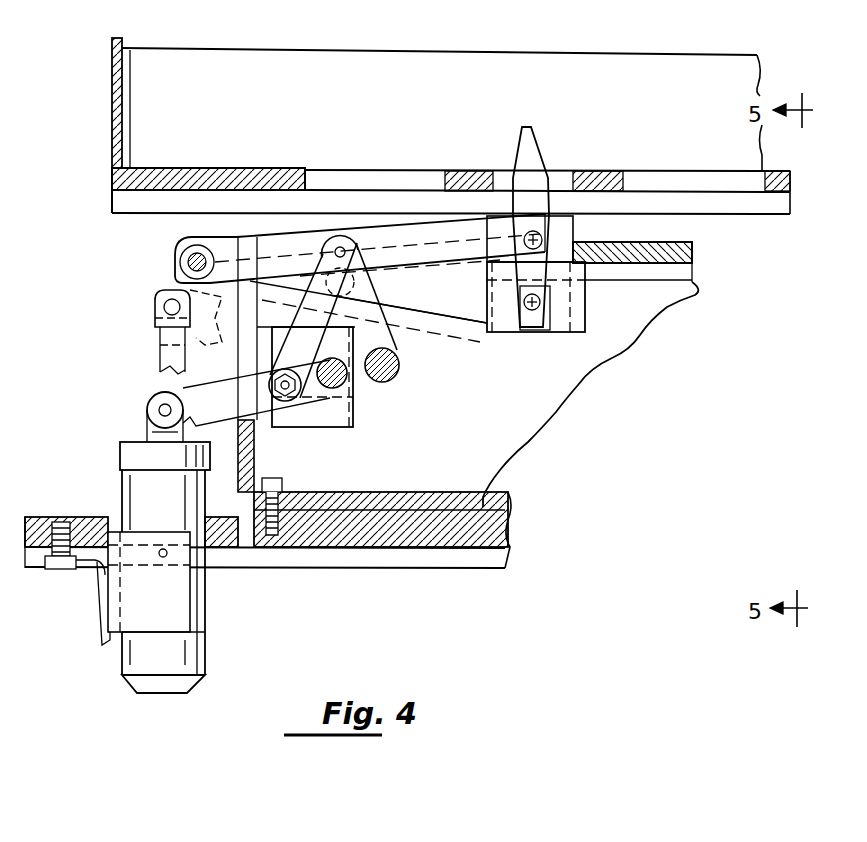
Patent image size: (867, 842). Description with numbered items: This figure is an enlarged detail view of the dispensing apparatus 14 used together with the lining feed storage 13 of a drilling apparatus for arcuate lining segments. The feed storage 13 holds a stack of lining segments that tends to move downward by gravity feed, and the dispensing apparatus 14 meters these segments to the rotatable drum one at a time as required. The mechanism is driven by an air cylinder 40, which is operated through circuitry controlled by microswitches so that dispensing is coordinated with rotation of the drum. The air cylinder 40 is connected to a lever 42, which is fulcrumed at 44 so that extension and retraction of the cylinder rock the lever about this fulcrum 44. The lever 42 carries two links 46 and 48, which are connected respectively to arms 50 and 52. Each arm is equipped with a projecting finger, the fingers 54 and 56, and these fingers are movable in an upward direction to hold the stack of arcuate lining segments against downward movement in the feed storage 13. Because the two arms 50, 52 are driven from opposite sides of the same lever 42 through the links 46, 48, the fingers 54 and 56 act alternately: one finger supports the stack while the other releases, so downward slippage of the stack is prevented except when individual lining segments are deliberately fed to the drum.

The lining feed storage 13 is at (241, 168).
The dispensing apparatus 14 is at (416, 139).
The air cylinder 40 is at (170, 650).
The lever 42 is at (160, 291).
The fulcrum 44 is at (342, 390).
The link 46 is at (390, 332).
The link 48 is at (302, 310).
The arm 50 is at (441, 228).
The arm 52 is at (477, 310).
The projecting finger 54 is at (530, 150).
The projecting finger 56 is at (548, 262).